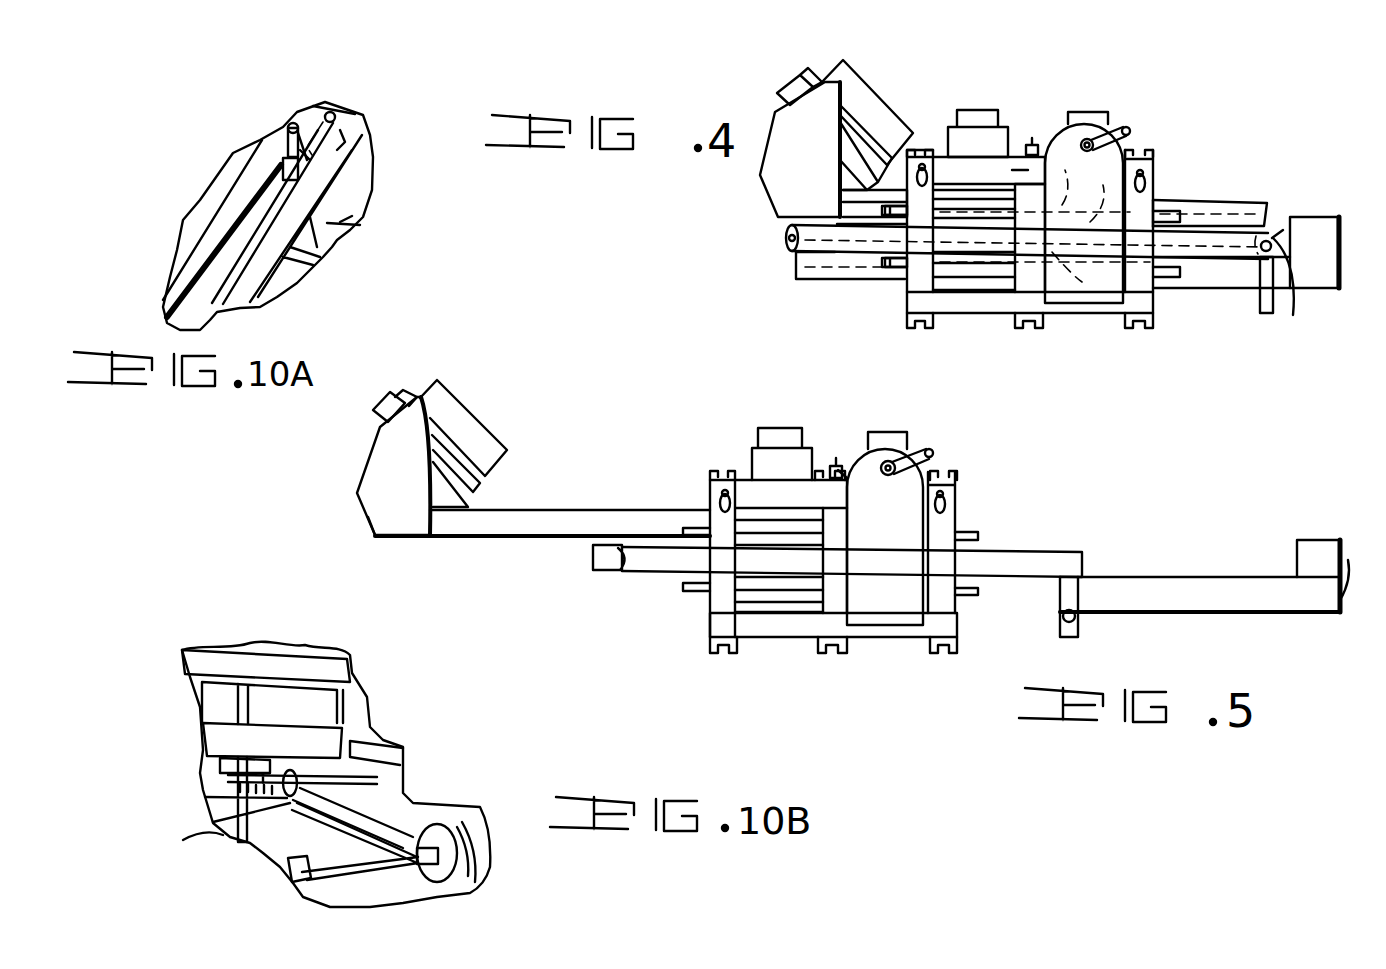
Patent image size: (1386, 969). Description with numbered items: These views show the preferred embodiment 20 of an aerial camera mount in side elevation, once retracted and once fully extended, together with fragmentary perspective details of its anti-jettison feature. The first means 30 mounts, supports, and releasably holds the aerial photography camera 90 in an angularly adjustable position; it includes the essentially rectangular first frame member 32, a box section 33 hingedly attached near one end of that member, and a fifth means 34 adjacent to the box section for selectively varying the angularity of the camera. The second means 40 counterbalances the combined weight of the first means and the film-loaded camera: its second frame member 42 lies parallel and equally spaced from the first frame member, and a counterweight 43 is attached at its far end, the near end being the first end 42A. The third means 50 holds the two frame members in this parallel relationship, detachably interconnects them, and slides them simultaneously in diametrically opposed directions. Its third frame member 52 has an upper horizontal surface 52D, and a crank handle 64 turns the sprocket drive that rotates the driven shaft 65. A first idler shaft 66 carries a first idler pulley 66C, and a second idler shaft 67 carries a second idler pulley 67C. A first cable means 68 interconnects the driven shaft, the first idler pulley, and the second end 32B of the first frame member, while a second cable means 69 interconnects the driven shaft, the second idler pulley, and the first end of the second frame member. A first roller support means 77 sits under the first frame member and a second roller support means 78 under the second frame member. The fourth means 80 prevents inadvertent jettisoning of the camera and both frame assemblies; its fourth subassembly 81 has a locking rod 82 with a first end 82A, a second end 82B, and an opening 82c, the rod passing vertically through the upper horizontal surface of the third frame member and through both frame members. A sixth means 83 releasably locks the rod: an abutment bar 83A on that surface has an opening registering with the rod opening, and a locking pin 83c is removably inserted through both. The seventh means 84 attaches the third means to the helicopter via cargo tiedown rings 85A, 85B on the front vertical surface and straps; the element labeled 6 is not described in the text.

In FIG. 4, the preferred embodiment of the invention 20 is at (1298, 128).
In FIG. 5, the preferred embodiment of the invention 20 is at (1226, 500).
In FIG. 4, the first means 30 is at (752, 199).
In FIG. 5, the first means 30 is at (410, 550).
In FIG. 4, the first frame member 32 is at (872, 207).
In FIG. 5, the first frame member 32 is at (495, 540).
In FIG. 4, the second end of the first frame member 32B is at (1269, 215).
In FIG. 10B, the second end of the first frame member 32B is at (213, 745).
In FIG. 5, the box section 33 is at (380, 415).
In FIG. 5, the fifth means 34 is at (368, 517).
In FIG. 4, the second means 40 is at (1340, 292).
In FIG. 5, the second means 40 is at (1314, 616).
In FIG. 5, the second frame member 42 is at (1215, 612).
In FIG. 10B, the second frame member 42 is at (402, 830).
In FIG. 4, the first end of the second frame member 42A is at (797, 264).
In FIG. 5, the first end of the second frame member 42A is at (1343, 582).
In FIG. 10B, the first end of the second frame member 42A is at (218, 805).
In FIG. 4, the counterweight 43 is at (1336, 246).
In FIG. 5, the counterweight 43 is at (1312, 548).
In FIG. 4, the third means 50 is at (1106, 320).
In FIG. 5, the third means 50 is at (886, 658).
In FIG. 10B, the third frame member 52 is at (335, 672).
In FIG. 10A, the upper horizontal surface of the third frame member 52D is at (220, 261).
In FIG. 4, the hook 6 is at (1283, 230).
In FIG. 4, the crank handle 64 is at (1126, 128).
In FIG. 5, the crank handle 64 is at (931, 452).
In FIG. 4, the driven shaft 65 is at (1101, 196).
In FIG. 10B, the driven shaft 65 is at (227, 778).
In FIG. 4, the first idler shaft 66 is at (790, 247).
In FIG. 10B, the first idler shaft 66 is at (283, 864).
In FIG. 4, the first idler pulley 66C is at (784, 238).
In FIG. 10B, the first idler pulley 66C is at (462, 886).
In FIG. 4, the second idler shaft 67 is at (1262, 252).
In FIG. 4, the second idler pulley 67C is at (1293, 315).
In FIG. 4, the first cable means 68 is at (1074, 178).
In FIG. 10B, the first cable means 68 is at (398, 810).
In FIG. 4, the second cable means 69 is at (1085, 275).
In FIG. 5, the first roller support means 77 is at (612, 572).
In FIG. 5, the second roller support means 78 is at (1080, 637).
In FIG. 4, the fourth means 80 is at (1047, 123).
In FIG. 5, the fourth means 80 is at (850, 442).
In FIG. 10A, the fourth means 80 is at (360, 94).
In FIG. 10A, the fourth subassembly 81 is at (280, 131).
In FIG. 4, the locking rod 82 is at (1031, 138).
In FIG. 5, the locking rod 82 is at (836, 458).
In FIG. 10A, the locking rod 82 is at (325, 214).
In FIG. 10B, the locking rod 82 is at (240, 703).
In FIG. 10A, the first end of the locking rod 82A is at (300, 116).
In FIG. 10B, the second end of the locking rod 82B is at (183, 840).
In FIG. 10A, the opening in the locking rod 82c is at (370, 180).
In FIG. 4, the sixth means 83 is at (1012, 170).
In FIG. 5, the sixth means 83 is at (840, 482).
In FIG. 10A, the sixth means 83 is at (338, 136).
In FIG. 10A, the abutment bar 83A is at (290, 155).
In FIG. 10A, the locking pin 83c is at (310, 153).
In FIG. 4, the seventh means 84 is at (1180, 167).
In FIG. 5, the seventh means 84 is at (693, 478).
In FIG. 4, the cargo tiedown ring 85A is at (924, 164).
In FIG. 5, the cargo tiedown ring 85A is at (718, 505).
In FIG. 4, the cargo tiedown ring 85B is at (1148, 171).
In FIG. 5, the cargo tiedown ring 85B is at (958, 504).
In FIG. 4, the aerial photography camera 90 is at (822, 84).
In FIG. 5, the aerial photography camera 90 is at (418, 392).